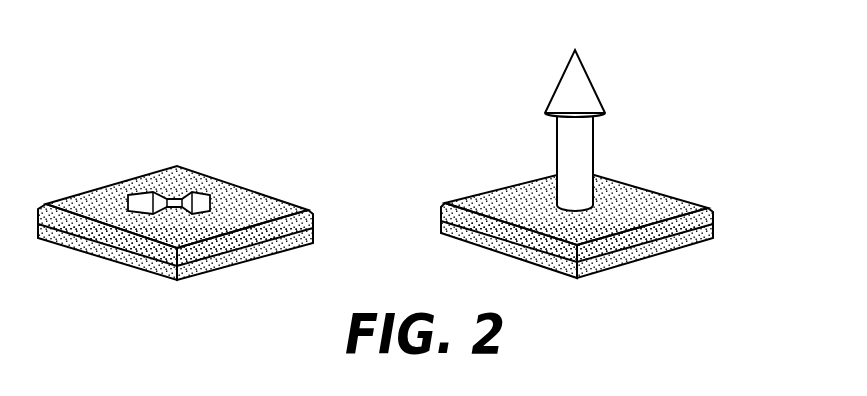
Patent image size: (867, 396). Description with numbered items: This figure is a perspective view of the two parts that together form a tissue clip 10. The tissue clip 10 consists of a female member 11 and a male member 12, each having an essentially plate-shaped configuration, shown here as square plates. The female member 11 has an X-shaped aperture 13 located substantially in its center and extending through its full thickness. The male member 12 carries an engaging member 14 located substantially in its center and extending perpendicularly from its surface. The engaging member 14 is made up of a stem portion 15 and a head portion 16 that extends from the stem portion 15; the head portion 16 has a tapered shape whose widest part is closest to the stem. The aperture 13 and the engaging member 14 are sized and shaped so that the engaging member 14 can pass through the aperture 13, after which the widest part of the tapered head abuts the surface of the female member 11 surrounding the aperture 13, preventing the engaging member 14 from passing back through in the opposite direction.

The tissue clip 10 is at (407, 153).
The female member 11 is at (175, 196).
The male member 12 is at (609, 153).
The X-shaped aperture 13 is at (183, 200).
The engaging member 14 is at (643, 120).
The stem portion 15 is at (593, 153).
The head portion 16 is at (587, 72).